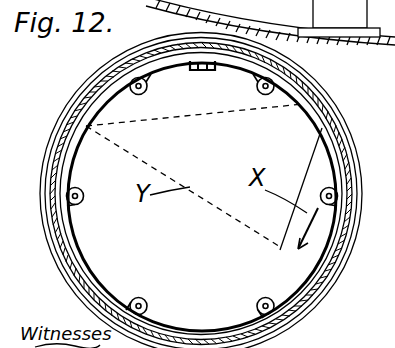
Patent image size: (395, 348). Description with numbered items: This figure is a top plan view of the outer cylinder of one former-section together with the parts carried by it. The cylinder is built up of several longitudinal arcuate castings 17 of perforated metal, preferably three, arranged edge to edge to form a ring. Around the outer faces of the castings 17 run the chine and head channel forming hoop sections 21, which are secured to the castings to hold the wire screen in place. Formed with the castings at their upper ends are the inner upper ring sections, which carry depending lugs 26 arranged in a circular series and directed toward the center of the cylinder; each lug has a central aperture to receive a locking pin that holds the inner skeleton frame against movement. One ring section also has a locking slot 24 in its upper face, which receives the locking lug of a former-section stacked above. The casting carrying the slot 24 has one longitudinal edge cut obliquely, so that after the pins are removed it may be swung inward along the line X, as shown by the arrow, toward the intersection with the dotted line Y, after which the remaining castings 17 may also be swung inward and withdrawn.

The longitudinal arcuate castings 17 is at (103, 69).
The chine and head channel forming hoop sections 21 is at (53, 137).
The locking slot 24 is at (202, 78).
The depending lugs 26 is at (268, 93).